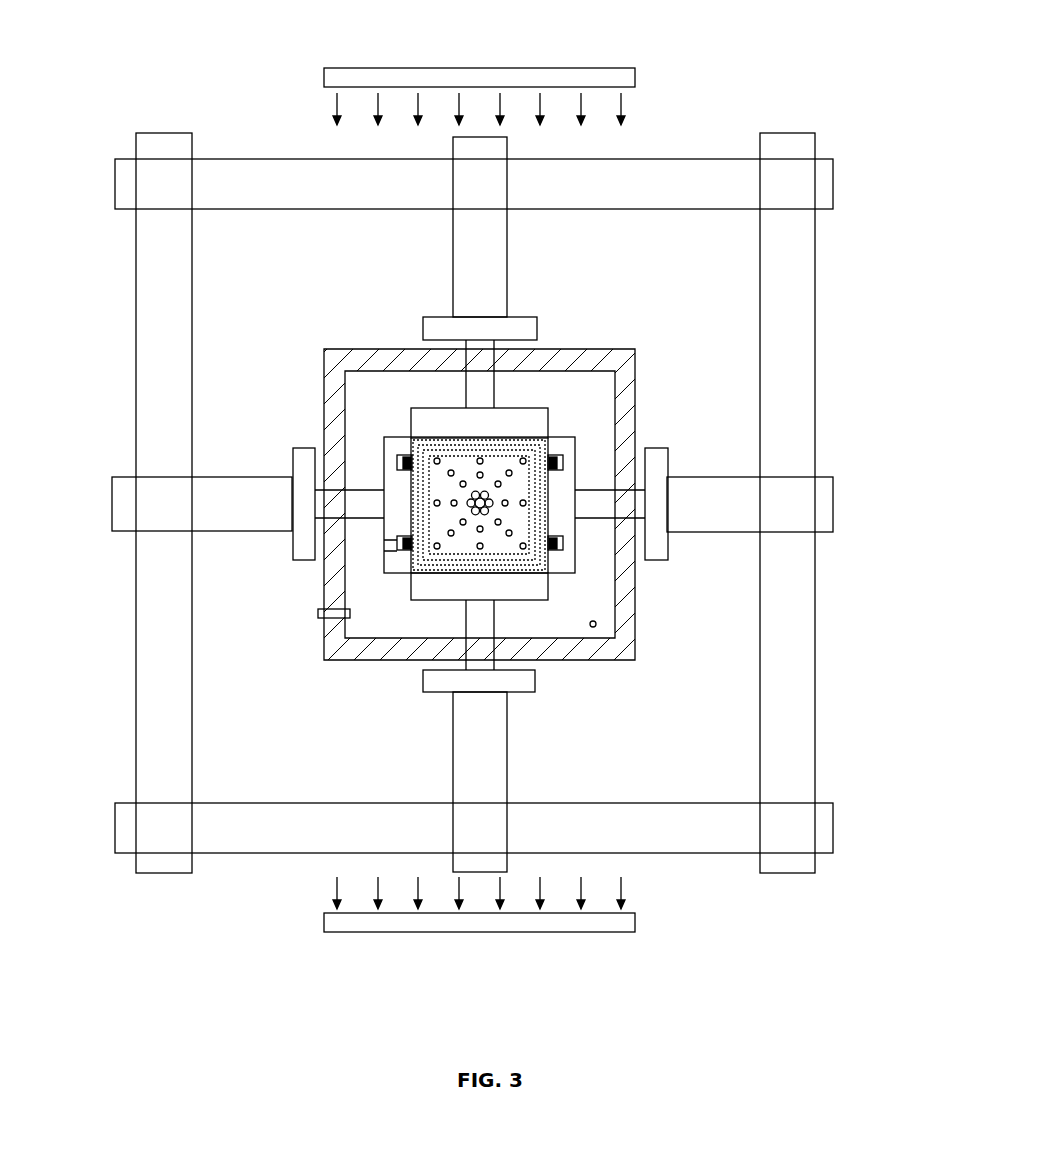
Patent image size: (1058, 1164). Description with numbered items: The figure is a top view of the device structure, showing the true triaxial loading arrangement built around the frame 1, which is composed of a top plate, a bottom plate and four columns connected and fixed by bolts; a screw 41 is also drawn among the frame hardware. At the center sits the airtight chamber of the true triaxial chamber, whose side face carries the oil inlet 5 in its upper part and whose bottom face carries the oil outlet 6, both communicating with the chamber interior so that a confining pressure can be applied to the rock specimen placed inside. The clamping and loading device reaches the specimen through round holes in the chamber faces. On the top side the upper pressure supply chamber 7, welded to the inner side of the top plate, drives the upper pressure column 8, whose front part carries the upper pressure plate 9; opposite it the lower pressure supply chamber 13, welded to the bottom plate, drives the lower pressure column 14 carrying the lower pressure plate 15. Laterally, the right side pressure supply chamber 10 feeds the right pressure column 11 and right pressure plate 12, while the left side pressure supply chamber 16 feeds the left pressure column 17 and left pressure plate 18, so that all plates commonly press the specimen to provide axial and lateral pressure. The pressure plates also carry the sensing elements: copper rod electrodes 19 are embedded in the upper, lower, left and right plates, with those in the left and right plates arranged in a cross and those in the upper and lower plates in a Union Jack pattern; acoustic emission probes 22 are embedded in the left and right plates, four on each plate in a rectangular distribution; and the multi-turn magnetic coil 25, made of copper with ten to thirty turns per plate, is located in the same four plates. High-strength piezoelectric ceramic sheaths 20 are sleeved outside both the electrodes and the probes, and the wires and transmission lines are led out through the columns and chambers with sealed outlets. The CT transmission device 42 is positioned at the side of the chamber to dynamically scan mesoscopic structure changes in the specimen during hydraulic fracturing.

The frame 1 is at (243, 181).
The oil inlet 5 is at (320, 617).
The oil outlet 6 is at (596, 627).
The upper pressure supply chamber 7 is at (490, 253).
The upper pressure column 8 is at (500, 387).
The upper pressure plate 9 is at (495, 423).
The right side pressure supply chamber 10 is at (575, 455).
The right pressure column 11 is at (600, 487).
The right pressure plate 12 is at (738, 475).
The lower pressure supply chamber 13 is at (505, 772).
The lower pressure column 14 is at (473, 600).
The lower pressure plate 15 is at (429, 599).
The left side pressure supply chamber 16 is at (397, 544).
The left pressure column 17 is at (384, 536).
The left pressure plate 18 is at (315, 531).
The copper rod electrode 19 is at (556, 550).
The high-strength piezoelectric ceramic sheath 20 is at (403, 548).
The acoustic emission probe 22 is at (386, 556).
The multi-turn magnetic coil 25 is at (522, 570).
The screw 41 is at (480, 78).
The CT transmission device 42 is at (480, 931).